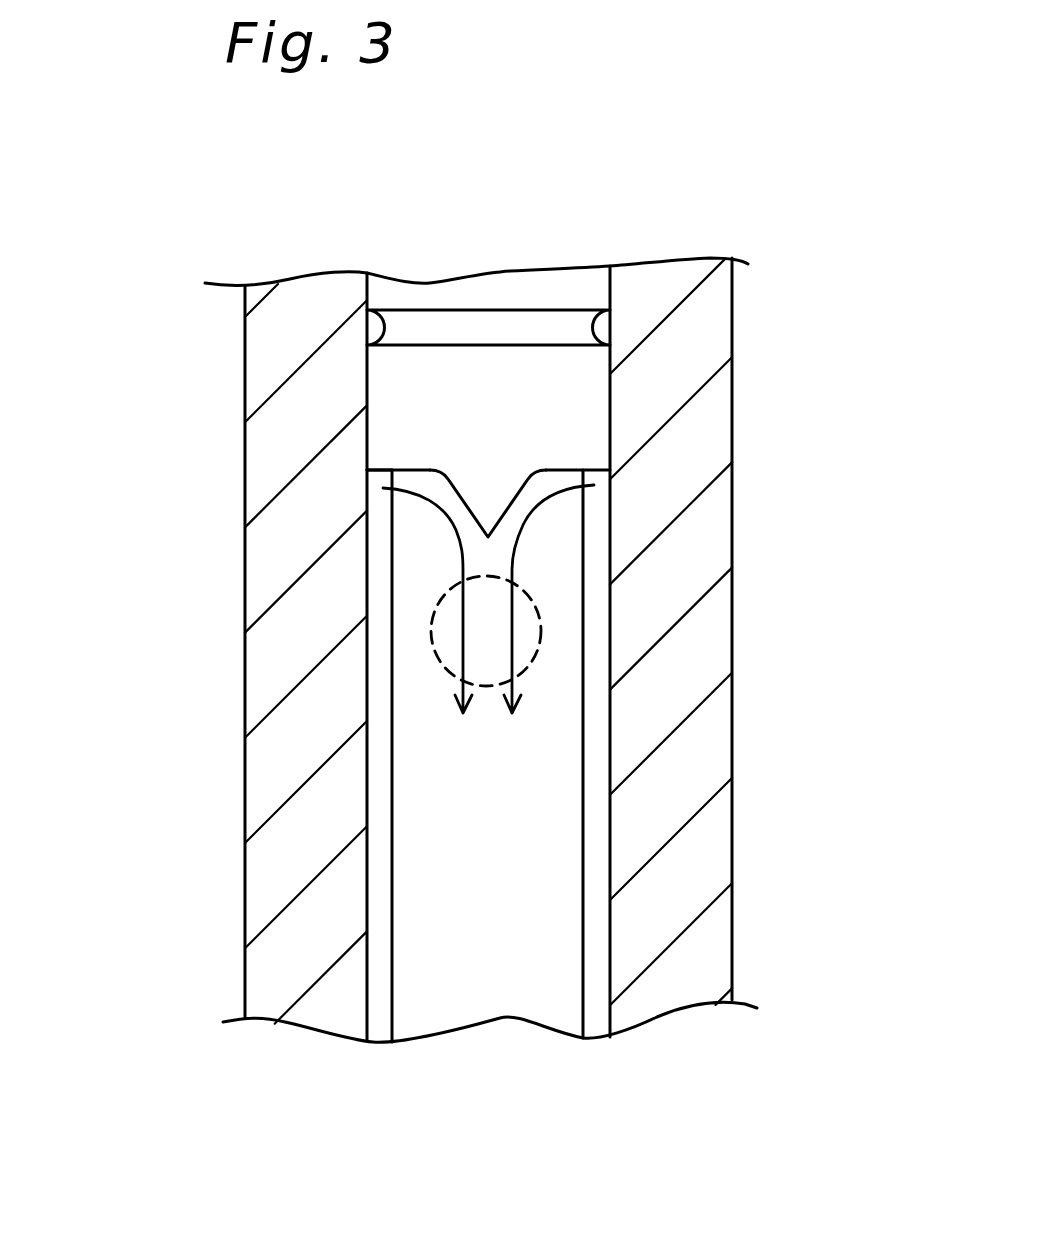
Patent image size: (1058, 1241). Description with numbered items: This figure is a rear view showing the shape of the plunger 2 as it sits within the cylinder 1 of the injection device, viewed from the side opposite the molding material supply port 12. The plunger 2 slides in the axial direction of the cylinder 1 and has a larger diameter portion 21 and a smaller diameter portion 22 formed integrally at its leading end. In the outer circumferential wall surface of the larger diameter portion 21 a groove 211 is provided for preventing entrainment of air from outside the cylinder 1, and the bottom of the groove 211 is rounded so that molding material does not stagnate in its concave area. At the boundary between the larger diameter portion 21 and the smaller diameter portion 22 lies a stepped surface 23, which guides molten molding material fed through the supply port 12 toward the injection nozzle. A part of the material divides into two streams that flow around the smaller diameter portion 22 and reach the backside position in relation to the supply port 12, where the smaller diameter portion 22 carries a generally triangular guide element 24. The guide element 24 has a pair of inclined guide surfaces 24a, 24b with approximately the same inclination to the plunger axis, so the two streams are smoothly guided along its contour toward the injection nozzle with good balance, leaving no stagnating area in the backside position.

The cylinder 1 is at (698, 677).
The plunger 2 is at (378, 813).
The supply port 12 is at (541, 643).
The larger diameter portion 21 is at (568, 421).
The groove 211 is at (605, 330).
The smaller diameter portion 22 is at (527, 867).
The stepped surface 23 is at (384, 470).
The guide element 24 is at (487, 495).
The inclined guide surface 24a is at (452, 528).
The inclined guide surface 24b is at (490, 494).